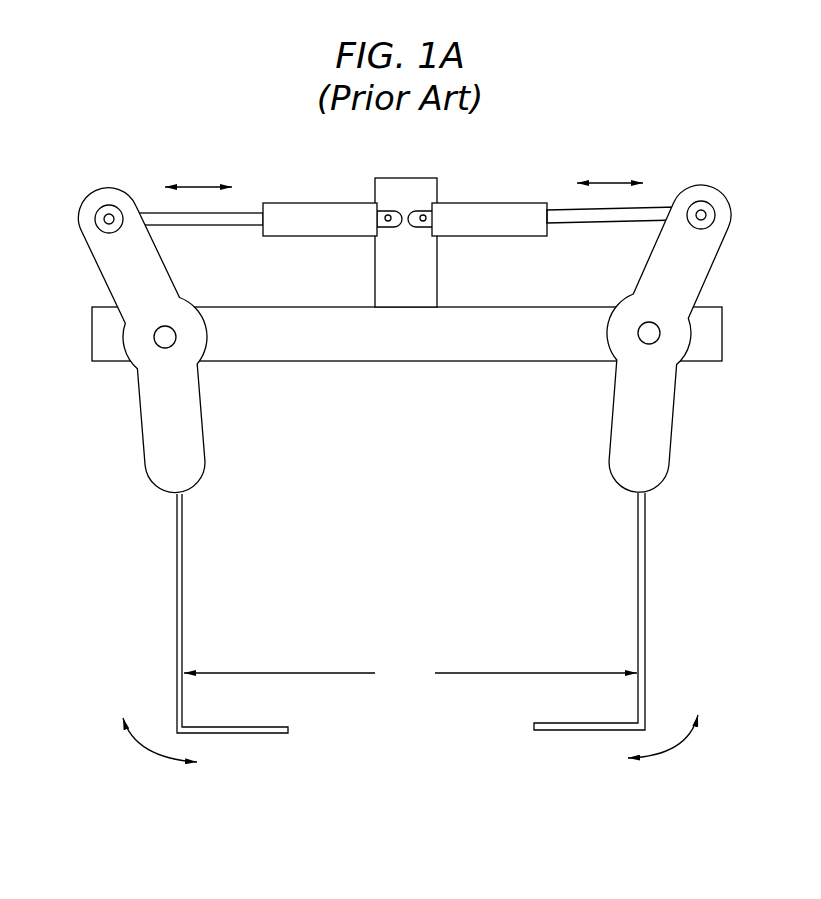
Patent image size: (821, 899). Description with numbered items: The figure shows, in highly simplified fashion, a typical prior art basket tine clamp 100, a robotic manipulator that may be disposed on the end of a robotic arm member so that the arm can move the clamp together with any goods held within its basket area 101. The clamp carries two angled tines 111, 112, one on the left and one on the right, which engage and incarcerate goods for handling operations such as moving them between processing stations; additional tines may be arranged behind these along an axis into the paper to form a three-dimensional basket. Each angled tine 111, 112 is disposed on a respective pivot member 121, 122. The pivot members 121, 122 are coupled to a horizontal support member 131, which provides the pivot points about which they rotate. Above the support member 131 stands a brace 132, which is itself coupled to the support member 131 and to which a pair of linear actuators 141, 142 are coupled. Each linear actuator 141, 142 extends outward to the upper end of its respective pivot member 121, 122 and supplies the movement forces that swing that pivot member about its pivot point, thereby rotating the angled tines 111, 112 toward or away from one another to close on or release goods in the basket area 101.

The basket tine clamp 100 is at (719, 150).
The basket area 101 is at (428, 581).
The angled tine 111 is at (173, 555).
The angled tine 112 is at (648, 570).
The pivot member 121 is at (148, 408).
The pivot member 122 is at (667, 403).
The support member 131 is at (429, 344).
The brace 132 is at (403, 178).
The linear actuator 141 is at (284, 203).
The linear actuator 142 is at (496, 203).